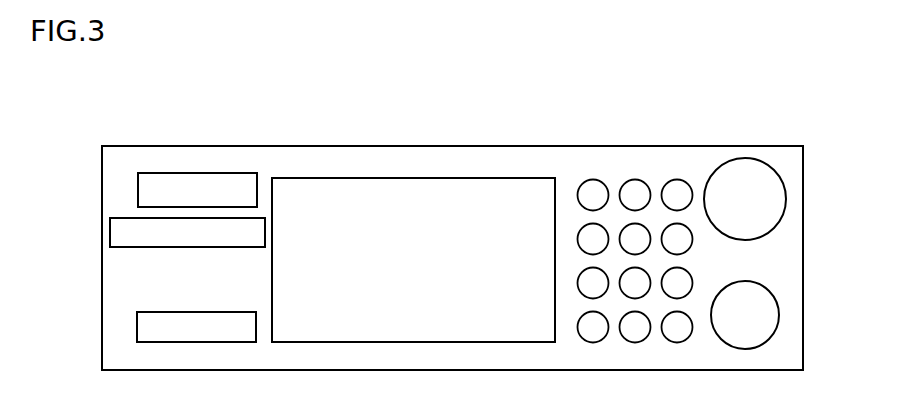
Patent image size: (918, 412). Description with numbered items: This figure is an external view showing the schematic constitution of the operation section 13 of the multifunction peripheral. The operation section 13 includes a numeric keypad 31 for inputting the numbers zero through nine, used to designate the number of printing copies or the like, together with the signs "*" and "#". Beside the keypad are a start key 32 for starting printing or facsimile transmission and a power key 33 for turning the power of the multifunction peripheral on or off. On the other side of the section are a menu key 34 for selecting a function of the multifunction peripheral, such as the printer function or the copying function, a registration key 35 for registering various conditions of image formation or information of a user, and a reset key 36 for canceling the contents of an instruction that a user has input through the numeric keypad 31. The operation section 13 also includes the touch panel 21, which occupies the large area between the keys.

The operation section 13 is at (757, 146).
The touch panel 21 is at (514, 178).
The numeric keypad 31 is at (644, 166).
The start key 32 is at (779, 313).
The power key 33 is at (786, 197).
The menu key 34 is at (138, 190).
The registration key 35 is at (110, 235).
The reset key 36 is at (137, 330).